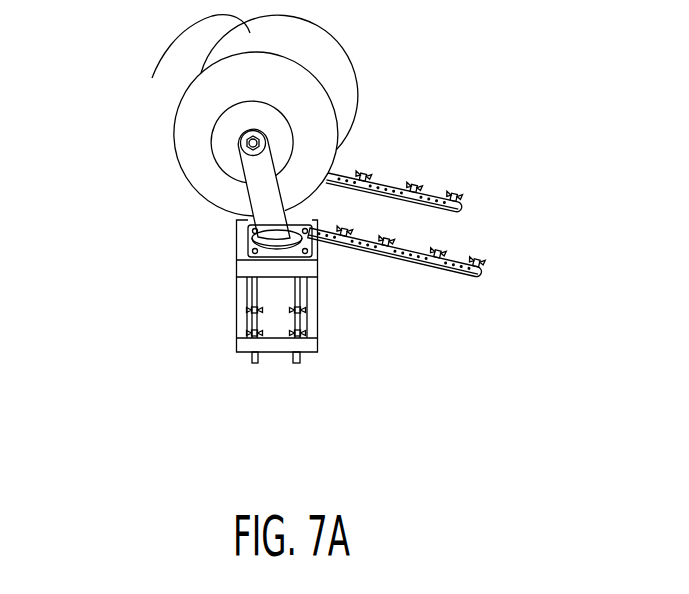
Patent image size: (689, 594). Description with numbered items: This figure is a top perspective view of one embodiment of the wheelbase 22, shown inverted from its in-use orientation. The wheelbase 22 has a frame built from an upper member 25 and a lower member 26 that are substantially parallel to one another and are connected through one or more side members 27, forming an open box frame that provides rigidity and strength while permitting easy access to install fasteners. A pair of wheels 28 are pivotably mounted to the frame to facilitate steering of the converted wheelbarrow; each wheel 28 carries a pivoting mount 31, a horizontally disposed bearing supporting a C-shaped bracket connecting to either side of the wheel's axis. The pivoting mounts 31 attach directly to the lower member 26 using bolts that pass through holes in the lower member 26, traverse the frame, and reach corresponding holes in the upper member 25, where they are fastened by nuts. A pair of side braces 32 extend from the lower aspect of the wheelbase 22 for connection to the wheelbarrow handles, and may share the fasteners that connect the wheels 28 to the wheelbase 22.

The wheelbase 22 is at (419, 80).
The upper member 25 is at (277, 345).
The lower member 26 is at (273, 270).
The side members 27 is at (242, 315).
The wheels 28 is at (185, 123).
The pivoting mounts 31 is at (257, 233).
The side braces 32 is at (377, 183).